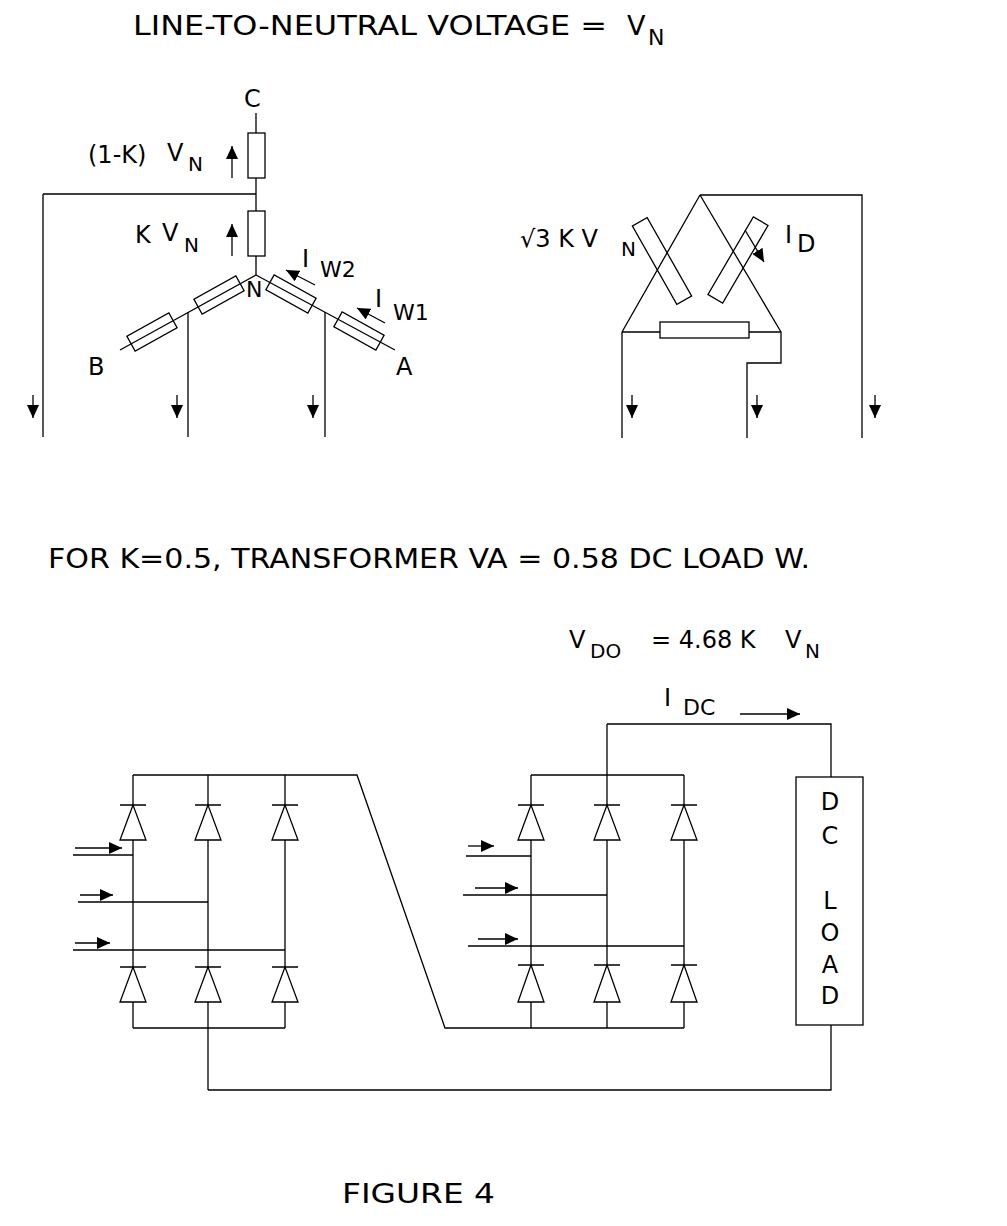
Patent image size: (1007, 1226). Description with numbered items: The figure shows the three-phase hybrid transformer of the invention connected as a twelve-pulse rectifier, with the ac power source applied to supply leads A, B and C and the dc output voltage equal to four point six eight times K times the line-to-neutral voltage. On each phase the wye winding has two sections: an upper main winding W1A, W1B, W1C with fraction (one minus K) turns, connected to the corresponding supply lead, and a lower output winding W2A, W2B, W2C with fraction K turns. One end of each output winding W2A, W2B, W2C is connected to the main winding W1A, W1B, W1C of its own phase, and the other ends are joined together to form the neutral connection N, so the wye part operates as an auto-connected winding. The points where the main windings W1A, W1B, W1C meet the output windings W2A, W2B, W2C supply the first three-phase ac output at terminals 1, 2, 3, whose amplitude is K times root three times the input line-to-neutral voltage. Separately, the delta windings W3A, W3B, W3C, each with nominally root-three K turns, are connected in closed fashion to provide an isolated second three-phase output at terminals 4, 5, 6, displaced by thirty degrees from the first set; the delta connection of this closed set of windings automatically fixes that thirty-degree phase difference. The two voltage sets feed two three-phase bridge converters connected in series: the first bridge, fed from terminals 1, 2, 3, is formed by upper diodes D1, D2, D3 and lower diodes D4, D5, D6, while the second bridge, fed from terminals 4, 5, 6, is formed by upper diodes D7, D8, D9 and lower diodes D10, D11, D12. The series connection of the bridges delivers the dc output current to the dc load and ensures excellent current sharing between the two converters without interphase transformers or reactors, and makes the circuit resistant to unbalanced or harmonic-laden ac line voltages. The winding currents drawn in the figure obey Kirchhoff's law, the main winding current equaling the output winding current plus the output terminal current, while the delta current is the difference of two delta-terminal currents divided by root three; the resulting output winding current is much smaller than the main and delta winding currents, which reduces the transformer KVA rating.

The output terminal 1 is at (198, 592).
The output terminal 2 is at (131, 615).
The output terminal 3 is at (159, 679).
The output terminal 4 is at (660, 631).
The output terminal 5 is at (601, 651).
The output terminal 6 is at (565, 676).
The main winding W1A is at (358, 349).
The main winding W1B is at (154, 344).
The main winding W1C is at (286, 155).
The output winding W2A is at (296, 313).
The output winding W2B is at (216, 309).
The output winding W2C is at (286, 233).
The delta winding W3A is at (729, 263).
The delta winding W3B is at (704, 345).
The delta winding W3C is at (664, 267).
The diode D1 is at (150, 822).
The diode D2 is at (225, 822).
The diode D3 is at (302, 822).
The diode D4 is at (150, 985).
The diode D5 is at (225, 985).
The diode D6 is at (302, 985).
The diode D7 is at (549, 822).
The diode D8 is at (625, 822).
The diode D9 is at (702, 822).
The diode D10 (labeled D9 in source) D10 is at (549, 983).
The diode D11 is at (629, 983).
The diode D12 is at (710, 983).